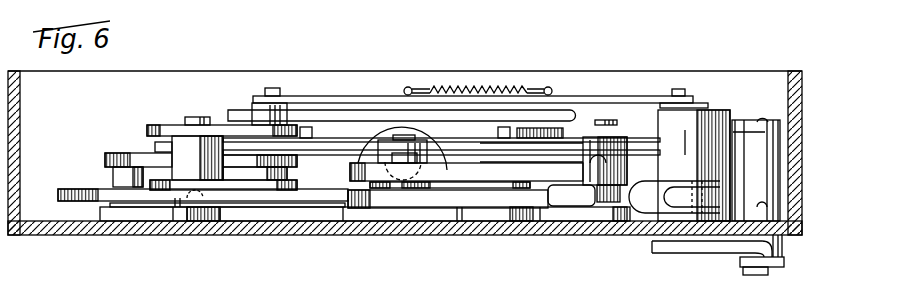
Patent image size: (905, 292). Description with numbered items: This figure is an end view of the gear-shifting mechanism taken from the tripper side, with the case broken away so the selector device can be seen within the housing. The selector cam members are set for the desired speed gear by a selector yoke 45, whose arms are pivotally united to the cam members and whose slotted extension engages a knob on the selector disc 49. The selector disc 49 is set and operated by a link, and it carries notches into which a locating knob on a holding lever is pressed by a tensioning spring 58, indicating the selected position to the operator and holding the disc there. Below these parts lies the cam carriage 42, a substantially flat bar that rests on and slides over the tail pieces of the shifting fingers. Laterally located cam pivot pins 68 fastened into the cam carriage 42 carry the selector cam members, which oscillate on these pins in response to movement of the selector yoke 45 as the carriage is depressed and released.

The selector yoke 45 is at (380, 96).
The tensioning spring 58 is at (489, 85).
The selector disc 49 is at (234, 110).
The cam carriage 42 is at (323, 189).
The cam pivot pin 68 is at (619, 121).